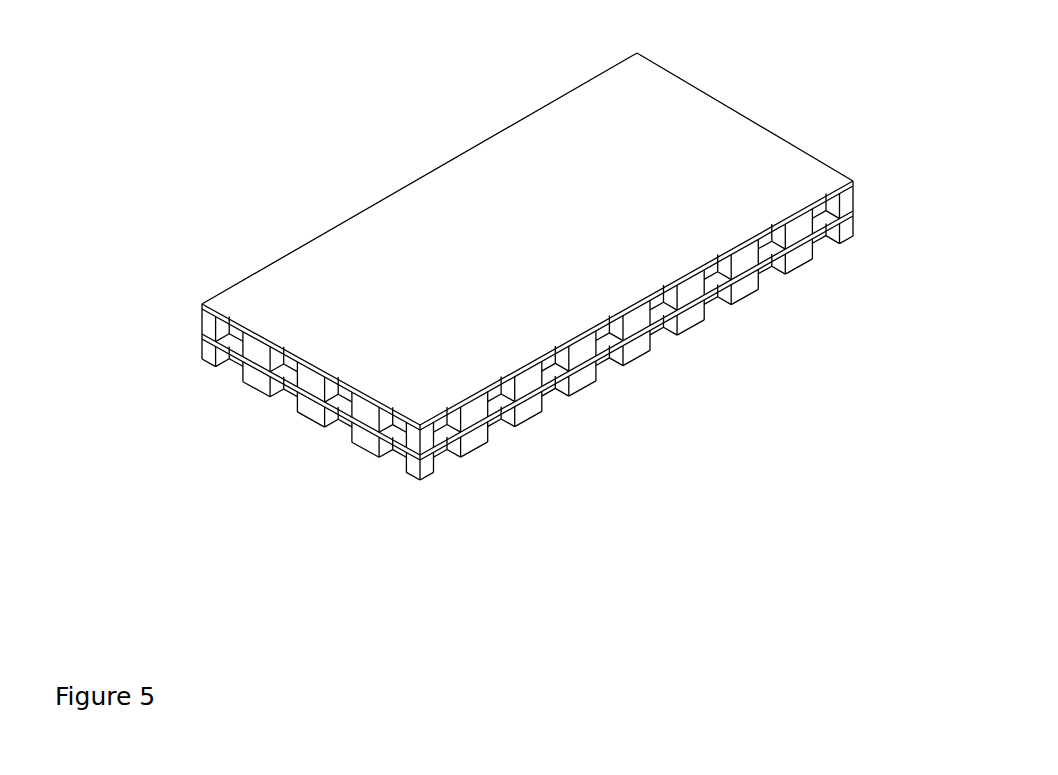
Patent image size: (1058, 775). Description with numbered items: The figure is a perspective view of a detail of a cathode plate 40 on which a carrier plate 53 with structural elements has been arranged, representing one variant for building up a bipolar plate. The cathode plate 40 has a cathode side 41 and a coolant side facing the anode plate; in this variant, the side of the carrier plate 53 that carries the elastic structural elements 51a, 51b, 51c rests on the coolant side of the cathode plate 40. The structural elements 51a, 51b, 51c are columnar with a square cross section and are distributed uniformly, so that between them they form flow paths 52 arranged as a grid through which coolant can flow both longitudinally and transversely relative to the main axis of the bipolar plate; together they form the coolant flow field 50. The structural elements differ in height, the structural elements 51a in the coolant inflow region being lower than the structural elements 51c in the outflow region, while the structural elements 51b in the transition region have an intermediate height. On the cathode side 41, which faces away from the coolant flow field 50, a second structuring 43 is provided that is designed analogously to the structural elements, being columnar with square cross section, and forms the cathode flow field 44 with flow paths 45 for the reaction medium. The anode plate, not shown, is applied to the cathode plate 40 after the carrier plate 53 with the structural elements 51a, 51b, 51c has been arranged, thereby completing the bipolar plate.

The cathode plate 40 is at (802, 260).
The cathode side 41 is at (702, 307).
The second structuring 43 is at (533, 420).
The cathode flow field 44 is at (372, 483).
The flow paths 45 is at (220, 392).
The coolant flow field 50 is at (280, 391).
The structural elements 51a is at (748, 265).
The structural elements 51b is at (640, 322).
The structural elements 51c is at (473, 412).
The flow paths 52 is at (340, 412).
The carrier plate 53 is at (692, 125).